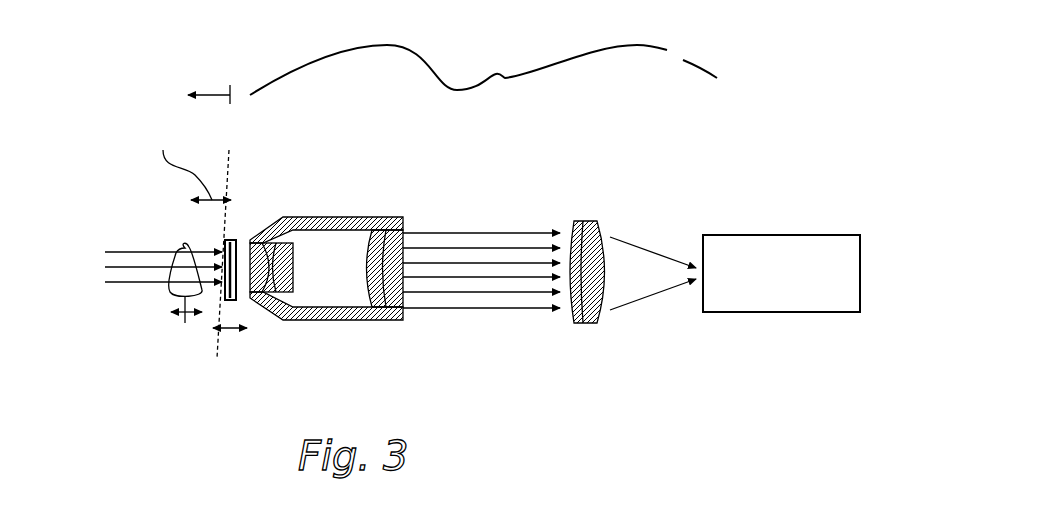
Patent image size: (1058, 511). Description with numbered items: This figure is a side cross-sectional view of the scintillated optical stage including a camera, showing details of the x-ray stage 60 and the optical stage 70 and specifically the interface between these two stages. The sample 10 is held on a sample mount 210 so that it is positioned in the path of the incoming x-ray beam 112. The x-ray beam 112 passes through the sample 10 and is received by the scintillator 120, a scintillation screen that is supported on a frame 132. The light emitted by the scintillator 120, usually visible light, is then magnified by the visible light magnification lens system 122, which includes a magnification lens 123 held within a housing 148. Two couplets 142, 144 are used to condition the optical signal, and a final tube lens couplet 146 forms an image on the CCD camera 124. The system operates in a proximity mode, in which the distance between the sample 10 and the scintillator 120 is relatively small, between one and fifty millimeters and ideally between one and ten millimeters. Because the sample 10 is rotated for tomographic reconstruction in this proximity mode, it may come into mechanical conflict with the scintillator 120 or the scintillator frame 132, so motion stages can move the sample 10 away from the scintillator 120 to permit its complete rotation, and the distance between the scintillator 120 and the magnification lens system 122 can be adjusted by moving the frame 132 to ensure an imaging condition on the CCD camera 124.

The sample 10 is at (170, 282).
The x-ray stage 60 is at (209, 81).
The optical stage 70 is at (483, 59).
The x-ray beam 112 is at (108, 252).
The scintillator 120 is at (239, 210).
The visible light magnification lens system 122 is at (279, 320).
The magnification lens 123 is at (263, 322).
The CCD camera 124 is at (770, 235).
The scintillator frame 132 is at (232, 299).
The couplet 142 is at (288, 258).
The couplet 144 is at (405, 235).
The tube lens couplet 146 is at (573, 227).
The housing 148 is at (380, 322).
The sample mount 210 is at (184, 322).